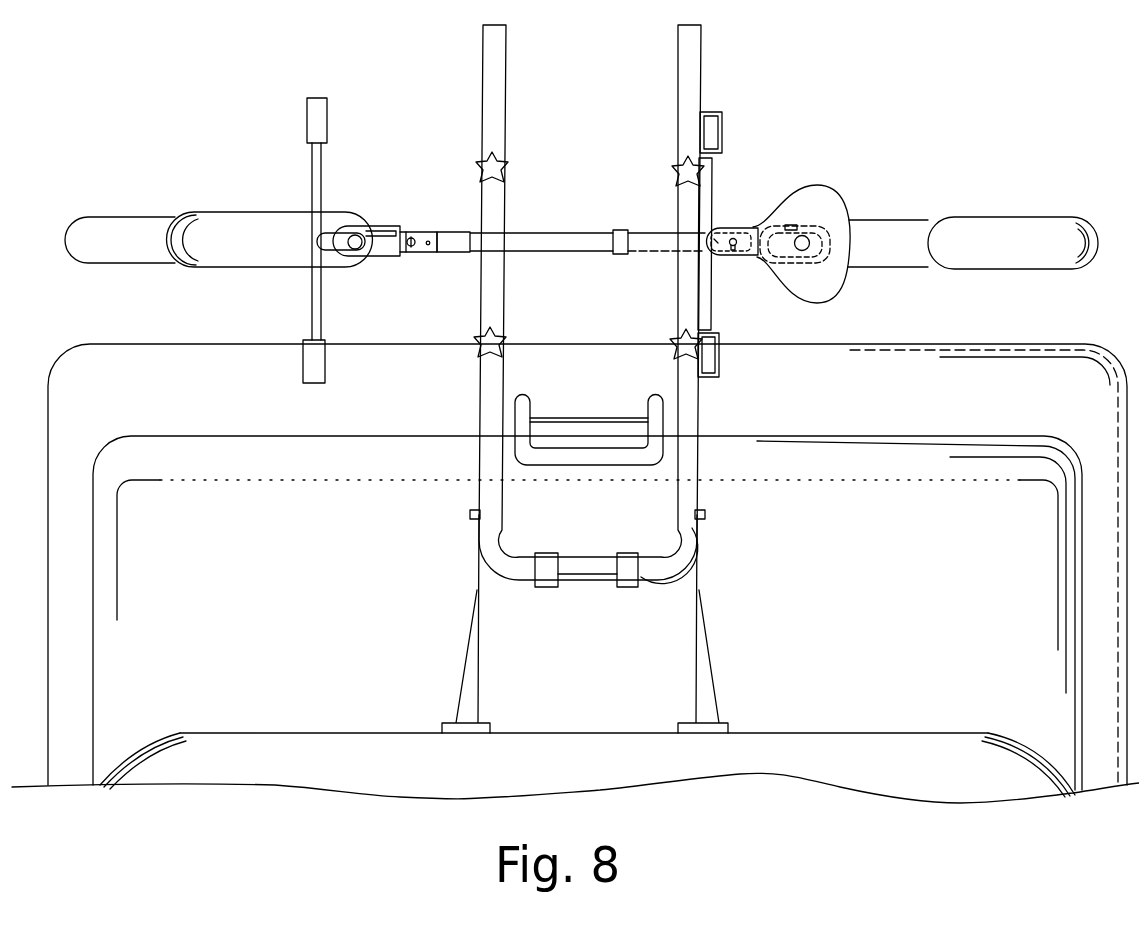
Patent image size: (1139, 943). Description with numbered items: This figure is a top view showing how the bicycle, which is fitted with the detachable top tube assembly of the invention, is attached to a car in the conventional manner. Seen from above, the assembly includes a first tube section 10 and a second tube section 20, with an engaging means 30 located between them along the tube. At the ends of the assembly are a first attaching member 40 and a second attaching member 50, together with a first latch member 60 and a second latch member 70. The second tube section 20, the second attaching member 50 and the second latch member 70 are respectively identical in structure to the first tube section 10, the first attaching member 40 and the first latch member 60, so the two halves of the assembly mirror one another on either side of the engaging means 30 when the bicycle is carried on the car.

The first tube section 10 is at (645, 243).
The second tube section 20 is at (542, 236).
The engaging means 30 is at (620, 232).
The first attaching member 40 is at (820, 240).
The second attaching member 50 is at (350, 228).
The first latch member 60 is at (777, 226).
The second latch member 70 is at (381, 232).